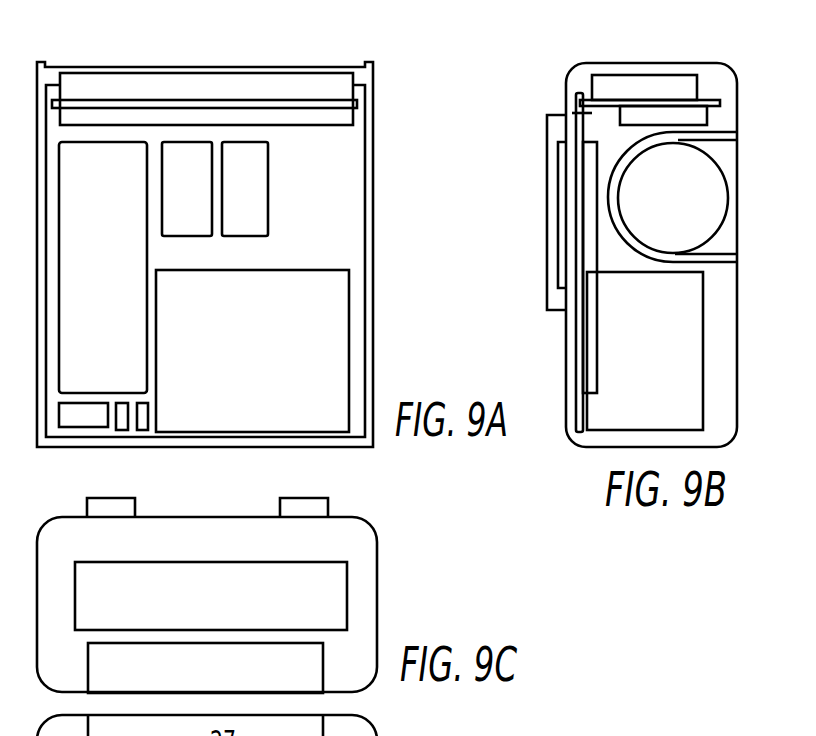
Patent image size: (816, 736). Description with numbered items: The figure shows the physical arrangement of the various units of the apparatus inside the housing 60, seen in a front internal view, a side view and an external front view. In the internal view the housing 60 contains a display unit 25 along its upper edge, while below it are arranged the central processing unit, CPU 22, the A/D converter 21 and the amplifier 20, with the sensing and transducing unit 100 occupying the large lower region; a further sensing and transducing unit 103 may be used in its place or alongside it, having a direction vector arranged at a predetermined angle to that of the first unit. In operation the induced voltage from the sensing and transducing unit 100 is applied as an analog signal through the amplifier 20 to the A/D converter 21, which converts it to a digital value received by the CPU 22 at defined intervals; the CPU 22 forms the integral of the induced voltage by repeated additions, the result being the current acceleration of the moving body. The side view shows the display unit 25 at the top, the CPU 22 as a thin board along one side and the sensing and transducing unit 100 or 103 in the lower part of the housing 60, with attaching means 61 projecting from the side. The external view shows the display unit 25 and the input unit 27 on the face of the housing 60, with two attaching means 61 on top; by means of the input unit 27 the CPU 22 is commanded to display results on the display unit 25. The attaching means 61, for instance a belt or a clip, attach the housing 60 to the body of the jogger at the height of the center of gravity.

In FIG. 9A, the amplifier 20 is at (258, 192).
In FIG. 9A, the A/D converter 21 is at (188, 225).
In FIG. 9A, the central processing unit (CPU) 22 is at (72, 267).
In FIG. 9B, the central processing unit (CPU) 22 is at (590, 345).
In FIG. 9A, the display unit 25 is at (311, 88).
In FIG. 9B, the display unit 25 is at (642, 82).
In FIG. 9C, the display unit 25 is at (168, 597).
In FIG. 9C, the input unit 27 is at (175, 673).
In FIG. 9B, the housing 60 is at (651, 255).
In FIG. 9C, the housing 60 is at (365, 557).
In FIG. 9B, the attaching means 61 is at (554, 172).
In FIG. 9C, the attaching means 61 is at (125, 510).
In FIG. 9A, the sensing and transducing unit 100 is at (252, 351).
In FIG. 9B, the sensing and transducing unit 100 is at (645, 351).
In FIG. 9A, the further sensing and transducing unit 103 is at (207, 366).
In FIG. 9B, the further sensing and transducing unit 103 is at (632, 341).